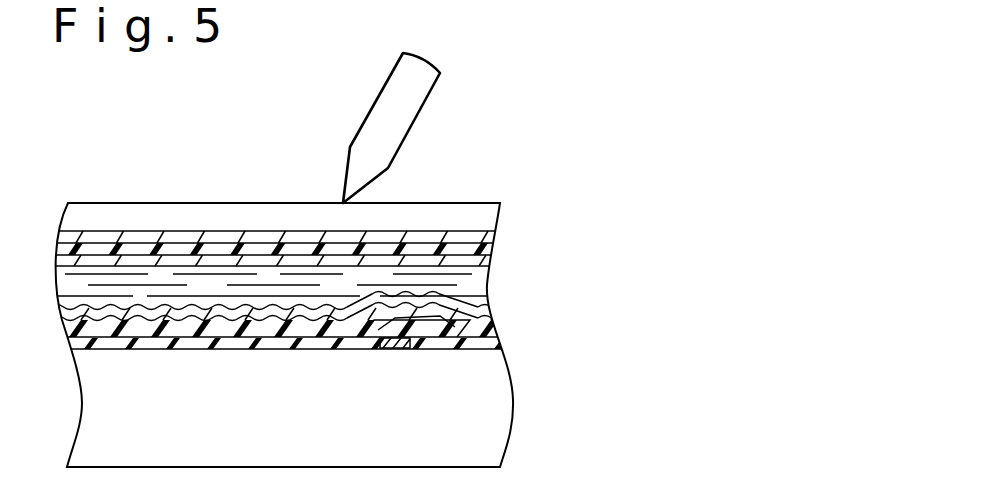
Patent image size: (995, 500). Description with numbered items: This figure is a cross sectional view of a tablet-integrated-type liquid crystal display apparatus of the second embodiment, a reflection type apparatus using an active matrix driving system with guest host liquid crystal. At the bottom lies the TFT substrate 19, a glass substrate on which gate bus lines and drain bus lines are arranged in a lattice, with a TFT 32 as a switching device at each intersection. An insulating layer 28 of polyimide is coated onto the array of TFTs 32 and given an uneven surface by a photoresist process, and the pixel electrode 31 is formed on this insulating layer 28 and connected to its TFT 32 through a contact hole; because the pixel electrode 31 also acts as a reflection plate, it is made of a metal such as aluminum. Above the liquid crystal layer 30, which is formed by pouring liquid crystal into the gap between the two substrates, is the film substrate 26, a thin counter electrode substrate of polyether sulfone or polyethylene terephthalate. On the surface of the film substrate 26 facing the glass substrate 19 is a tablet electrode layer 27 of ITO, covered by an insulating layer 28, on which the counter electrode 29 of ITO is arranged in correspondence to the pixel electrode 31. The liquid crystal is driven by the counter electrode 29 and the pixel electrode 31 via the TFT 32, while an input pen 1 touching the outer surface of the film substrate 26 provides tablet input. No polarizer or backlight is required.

The input pen 1 is at (428, 97).
The TFT substrate 19 is at (498, 433).
The film substrate 26 is at (490, 213).
The tablet electrode layer 27 is at (490, 232).
The insulating layer 28 is at (495, 245).
The counter electrode 29 is at (490, 262).
The liquid crystal layer 30 is at (487, 285).
The pixel electrode 31 is at (490, 310).
The TFT 32 is at (357, 351).